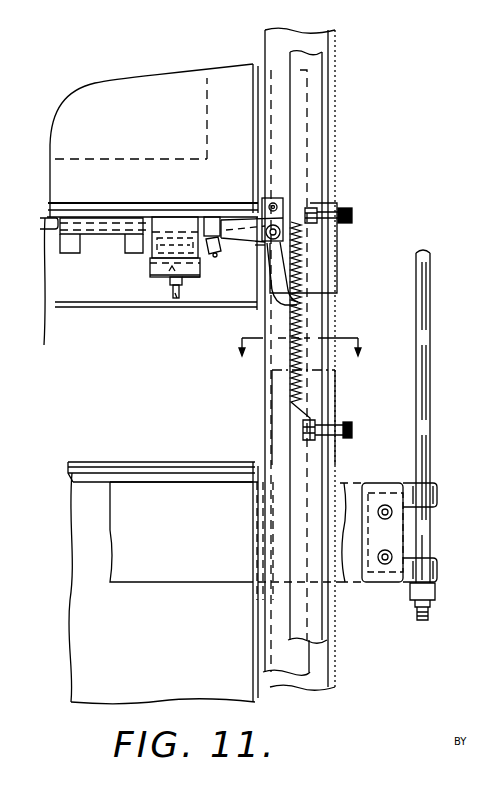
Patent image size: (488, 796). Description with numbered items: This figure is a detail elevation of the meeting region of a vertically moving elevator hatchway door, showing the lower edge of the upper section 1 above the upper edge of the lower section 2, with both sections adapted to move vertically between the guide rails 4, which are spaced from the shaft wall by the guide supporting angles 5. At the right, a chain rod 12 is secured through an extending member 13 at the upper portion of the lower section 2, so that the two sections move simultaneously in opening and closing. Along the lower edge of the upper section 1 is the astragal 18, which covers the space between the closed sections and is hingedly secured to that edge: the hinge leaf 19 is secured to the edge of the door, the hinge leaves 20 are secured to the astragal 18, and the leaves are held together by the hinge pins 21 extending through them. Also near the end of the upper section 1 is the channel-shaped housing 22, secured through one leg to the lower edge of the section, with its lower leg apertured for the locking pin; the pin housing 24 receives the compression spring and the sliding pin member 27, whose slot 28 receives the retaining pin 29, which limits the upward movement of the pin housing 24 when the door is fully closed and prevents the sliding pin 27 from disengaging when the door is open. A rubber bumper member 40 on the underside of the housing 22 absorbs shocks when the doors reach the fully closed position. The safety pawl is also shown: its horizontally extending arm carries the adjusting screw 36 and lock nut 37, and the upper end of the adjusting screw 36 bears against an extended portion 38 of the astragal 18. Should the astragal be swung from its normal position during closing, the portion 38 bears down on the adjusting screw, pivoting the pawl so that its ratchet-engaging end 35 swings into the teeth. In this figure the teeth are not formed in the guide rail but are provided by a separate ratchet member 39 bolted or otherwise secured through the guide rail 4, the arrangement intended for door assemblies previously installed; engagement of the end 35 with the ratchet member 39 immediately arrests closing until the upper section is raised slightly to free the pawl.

The upper section of the door 1 is at (127, 81).
The lower section of the door 2 is at (95, 488).
The guide rails 4 is at (315, 93).
The guide supporting angles 5 is at (325, 40).
The chain rods 12 is at (445, 373).
The extending member 13 is at (388, 576).
The astragal 18 is at (67, 292).
The hinge leaf 19 is at (120, 232).
The hinge leaves 20 is at (73, 252).
The hinge pins 21 is at (105, 217).
The channel-shaped housing 22 is at (167, 218).
The pin housing 24 is at (168, 277).
The sliding pin member 27 is at (176, 301).
The slot 28 is at (172, 293).
The retaining pin 29 is at (181, 280).
The ratchet-engaging end 35 is at (300, 303).
The adjusting screw 36 is at (215, 258).
The lock nut 37 is at (216, 252).
The extended portion of the astragal 38 is at (215, 217).
The separate ratchet member 39 is at (310, 389).
The rubber bumper member 40 is at (150, 275).